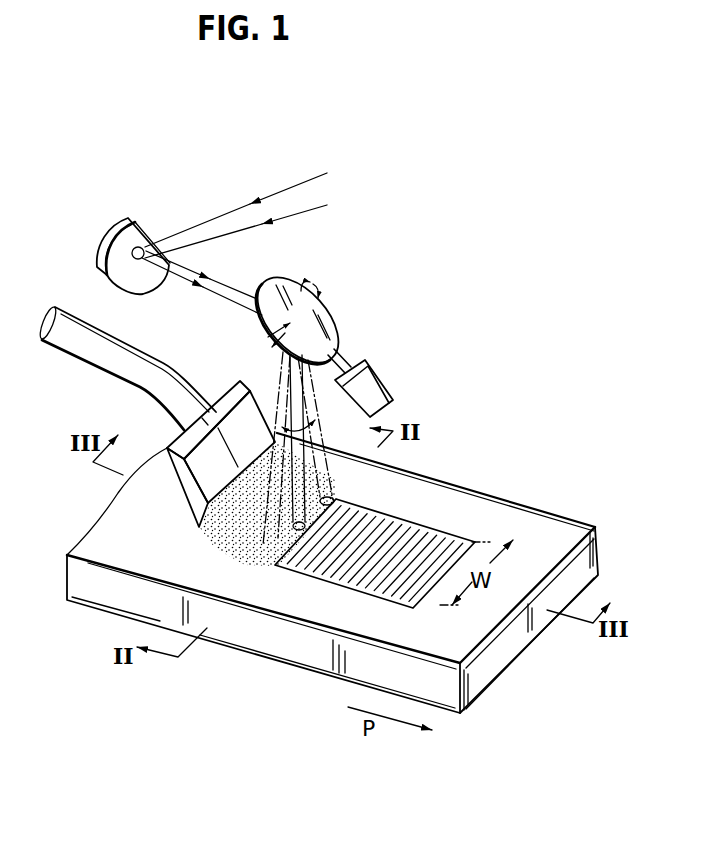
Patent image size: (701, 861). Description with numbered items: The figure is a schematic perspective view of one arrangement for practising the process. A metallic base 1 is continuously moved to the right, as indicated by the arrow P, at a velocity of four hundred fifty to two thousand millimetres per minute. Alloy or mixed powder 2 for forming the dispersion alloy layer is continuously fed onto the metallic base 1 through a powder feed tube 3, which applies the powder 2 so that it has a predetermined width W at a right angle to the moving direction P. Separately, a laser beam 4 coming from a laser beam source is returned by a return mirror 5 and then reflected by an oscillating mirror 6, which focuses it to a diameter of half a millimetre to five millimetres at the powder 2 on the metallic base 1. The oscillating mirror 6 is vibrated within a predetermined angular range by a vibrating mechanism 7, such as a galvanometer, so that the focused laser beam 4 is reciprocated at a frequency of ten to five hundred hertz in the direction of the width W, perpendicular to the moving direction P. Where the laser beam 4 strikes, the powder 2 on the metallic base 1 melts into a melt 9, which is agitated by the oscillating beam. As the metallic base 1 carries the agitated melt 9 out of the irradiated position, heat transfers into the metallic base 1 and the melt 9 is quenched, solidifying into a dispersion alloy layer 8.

The metallic base 1 is at (490, 667).
The alloy or mixed powder 2 is at (210, 528).
The powder feed tube 3 is at (166, 500).
The laser beam 4 is at (229, 226).
The return mirror 5 is at (105, 262).
The oscillating mirror 6 is at (322, 313).
The vibrating mechanism 7 is at (374, 377).
The dispersion alloy layer 8 is at (432, 531).
The melt 9 is at (296, 535).